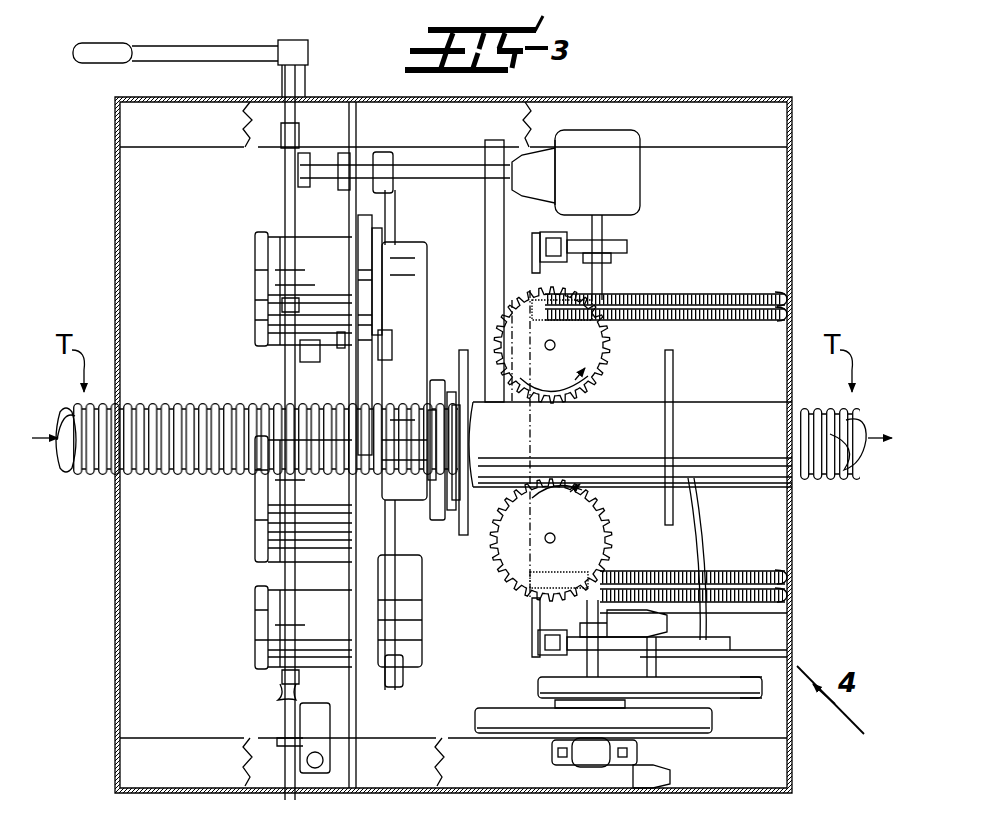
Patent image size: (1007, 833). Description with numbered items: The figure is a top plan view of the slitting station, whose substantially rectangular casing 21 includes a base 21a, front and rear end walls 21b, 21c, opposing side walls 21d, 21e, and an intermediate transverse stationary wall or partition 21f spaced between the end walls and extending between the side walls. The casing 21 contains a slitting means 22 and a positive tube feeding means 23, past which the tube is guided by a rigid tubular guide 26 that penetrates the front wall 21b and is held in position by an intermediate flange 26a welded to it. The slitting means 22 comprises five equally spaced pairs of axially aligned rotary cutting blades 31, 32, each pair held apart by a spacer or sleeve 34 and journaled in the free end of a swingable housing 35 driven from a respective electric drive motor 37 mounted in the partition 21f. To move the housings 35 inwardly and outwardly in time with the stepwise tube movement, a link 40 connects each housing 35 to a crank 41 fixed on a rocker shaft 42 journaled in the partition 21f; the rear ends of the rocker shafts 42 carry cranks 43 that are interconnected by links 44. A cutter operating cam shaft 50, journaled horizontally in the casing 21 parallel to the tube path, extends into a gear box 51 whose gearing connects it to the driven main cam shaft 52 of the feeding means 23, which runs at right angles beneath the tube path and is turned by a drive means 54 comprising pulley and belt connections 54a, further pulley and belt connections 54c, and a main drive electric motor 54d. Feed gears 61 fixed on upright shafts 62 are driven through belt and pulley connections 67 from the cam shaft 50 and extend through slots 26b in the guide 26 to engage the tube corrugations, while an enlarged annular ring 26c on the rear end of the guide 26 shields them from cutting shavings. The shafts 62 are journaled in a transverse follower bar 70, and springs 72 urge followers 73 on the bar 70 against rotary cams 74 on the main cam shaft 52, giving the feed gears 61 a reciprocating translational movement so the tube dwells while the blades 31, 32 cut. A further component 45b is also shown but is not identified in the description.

The casing 21 is at (794, 148).
The base 21a is at (192, 329).
The front end wall 21b is at (797, 254).
The rear end wall 21c is at (115, 246).
The side wall 21d is at (236, 766).
The side wall 21e is at (654, 102).
The intermediate transverse stationary wall or partition 21f is at (344, 108).
The slitting means 22 is at (403, 673).
The positive tube feeding means 23 is at (608, 365).
The rigid tubular guide 26 is at (766, 405).
The intermediate flange 26a is at (668, 421).
The slots 26b is at (638, 488).
The enlarged annular shield or ring 26c is at (454, 390).
The rotary cutting blade 31 is at (446, 471).
The rotary cutting blade 32 is at (430, 452).
The spacer or sleeve 34 is at (458, 395).
The swingable or pivoted housing 35 is at (418, 310).
The electric drive motor 37 is at (333, 271).
The link 40 is at (394, 219).
The crank 41 is at (386, 160).
The rocker shaft 42 is at (322, 349).
The crank 43 is at (284, 351).
The link 44 is at (282, 189).
The lever plate 45b is at (694, 646).
The cutter operating cam shaft 50 is at (428, 168).
The gear box 51 is at (610, 189).
The driven main cam shaft 52 is at (600, 236).
The drive means 54 is at (532, 734).
The pulley and belt connections 54a is at (698, 742).
The pulley and belt connections 54c is at (749, 702).
The main drive electric motor 54d is at (689, 508).
The feed gear 61 is at (589, 352).
The upright shaft 62 is at (544, 343).
The belt and pulley connections 67 is at (486, 229).
The transverse follower bar 70 is at (534, 271).
The spring 72 is at (742, 301).
The follower 73 is at (548, 234).
The rotary cam 74 is at (626, 247).